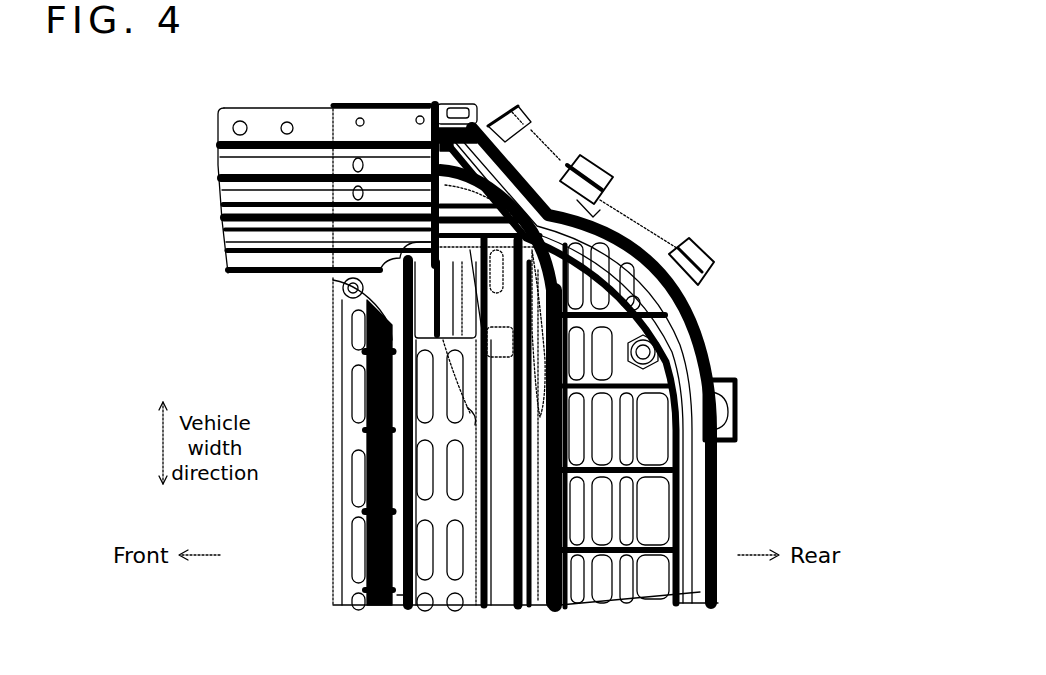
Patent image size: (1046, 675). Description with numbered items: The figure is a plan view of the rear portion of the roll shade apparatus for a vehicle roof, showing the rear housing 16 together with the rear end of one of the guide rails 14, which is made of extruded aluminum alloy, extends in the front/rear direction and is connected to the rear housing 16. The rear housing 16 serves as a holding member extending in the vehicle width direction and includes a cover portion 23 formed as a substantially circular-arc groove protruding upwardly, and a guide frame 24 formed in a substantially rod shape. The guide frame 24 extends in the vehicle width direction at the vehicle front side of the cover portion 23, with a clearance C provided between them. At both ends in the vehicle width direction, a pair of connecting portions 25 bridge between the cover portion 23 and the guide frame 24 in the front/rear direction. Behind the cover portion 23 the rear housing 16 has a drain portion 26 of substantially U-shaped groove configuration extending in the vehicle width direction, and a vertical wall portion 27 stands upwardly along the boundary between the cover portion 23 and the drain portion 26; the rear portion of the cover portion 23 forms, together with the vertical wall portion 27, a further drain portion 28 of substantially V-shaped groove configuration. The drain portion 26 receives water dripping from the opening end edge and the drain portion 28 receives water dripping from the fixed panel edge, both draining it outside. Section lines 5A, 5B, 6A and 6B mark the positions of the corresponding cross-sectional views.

The guide rail 14 is at (232, 106).
The connecting portion 25 is at (434, 104).
The rear housing 16 is at (515, 160).
The guide frame 24 is at (333, 511).
The cover portion 23 is at (440, 600).
The clearance C is at (404, 606).
The drain portion 28 is at (507, 603).
The vertical wall portion 27 is at (543, 606).
The drain portion 26 is at (560, 606).
The section line 5A is at (205, 268).
The section line 5B is at (290, 433).
The section line 6A is at (305, 92).
The section line 6B is at (385, 92).